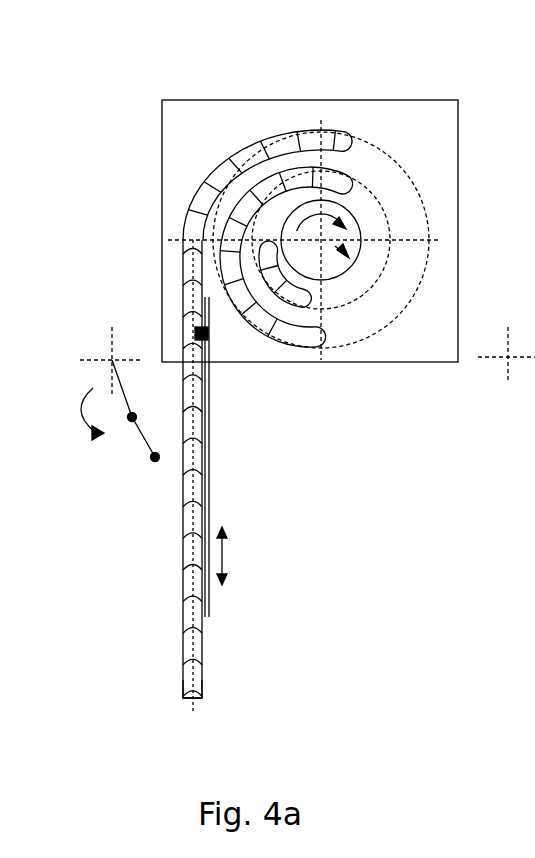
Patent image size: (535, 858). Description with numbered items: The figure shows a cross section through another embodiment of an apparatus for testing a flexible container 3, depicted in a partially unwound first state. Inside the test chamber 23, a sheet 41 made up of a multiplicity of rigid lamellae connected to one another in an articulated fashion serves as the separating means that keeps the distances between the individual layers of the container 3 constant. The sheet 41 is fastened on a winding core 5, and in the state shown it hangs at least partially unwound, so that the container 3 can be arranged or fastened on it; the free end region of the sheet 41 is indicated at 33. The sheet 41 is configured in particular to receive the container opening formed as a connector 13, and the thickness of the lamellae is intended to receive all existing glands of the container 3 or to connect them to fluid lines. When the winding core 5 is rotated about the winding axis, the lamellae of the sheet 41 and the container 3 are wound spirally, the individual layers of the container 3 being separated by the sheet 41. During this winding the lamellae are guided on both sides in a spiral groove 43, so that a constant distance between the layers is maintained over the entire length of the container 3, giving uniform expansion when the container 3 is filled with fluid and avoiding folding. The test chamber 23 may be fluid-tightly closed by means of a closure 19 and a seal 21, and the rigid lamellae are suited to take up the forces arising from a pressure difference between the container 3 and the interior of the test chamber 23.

The container 3 is at (210, 452).
The winding core 5 is at (353, 258).
The connector 13 is at (208, 340).
The closure 19 is at (153, 457).
The seal 21 is at (153, 458).
The test chamber 23 is at (190, 108).
The tube end 33 is at (203, 650).
The sheet 41 is at (181, 527).
The spiral groove 43 is at (406, 170).